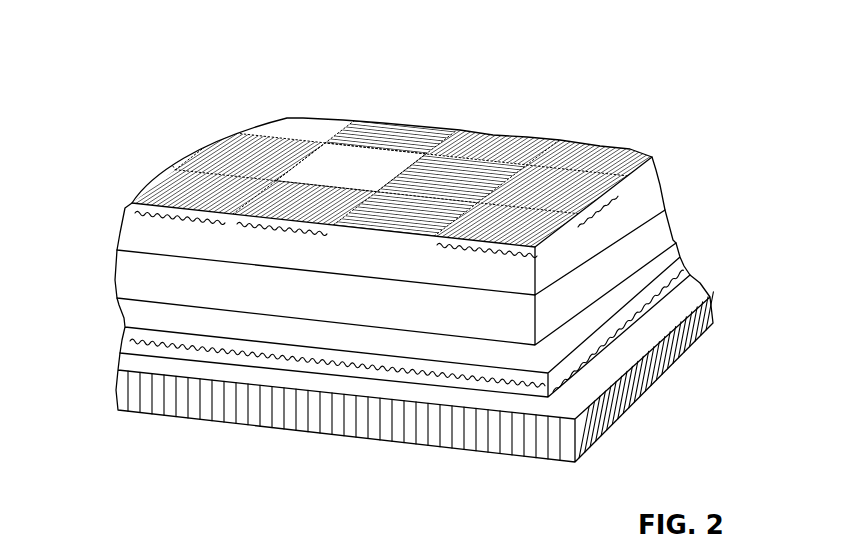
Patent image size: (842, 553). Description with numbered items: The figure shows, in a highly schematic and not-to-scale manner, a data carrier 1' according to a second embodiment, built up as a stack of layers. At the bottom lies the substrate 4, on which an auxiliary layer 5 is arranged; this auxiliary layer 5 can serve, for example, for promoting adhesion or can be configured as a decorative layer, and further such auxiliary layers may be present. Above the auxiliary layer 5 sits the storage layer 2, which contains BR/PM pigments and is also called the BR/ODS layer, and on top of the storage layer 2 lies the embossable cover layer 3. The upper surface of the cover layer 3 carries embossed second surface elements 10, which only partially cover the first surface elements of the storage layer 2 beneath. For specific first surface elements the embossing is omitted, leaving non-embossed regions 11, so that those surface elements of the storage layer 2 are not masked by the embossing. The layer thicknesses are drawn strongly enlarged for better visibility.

The data carrier 1' is at (400, 242).
The storage layer 2 is at (648, 230).
The cover layer 3 is at (647, 183).
The substrate 4 is at (596, 425).
The auxiliary layer 5 is at (678, 258).
The second surface elements 10 is at (572, 147).
The non-embossed regions 11 is at (368, 148).